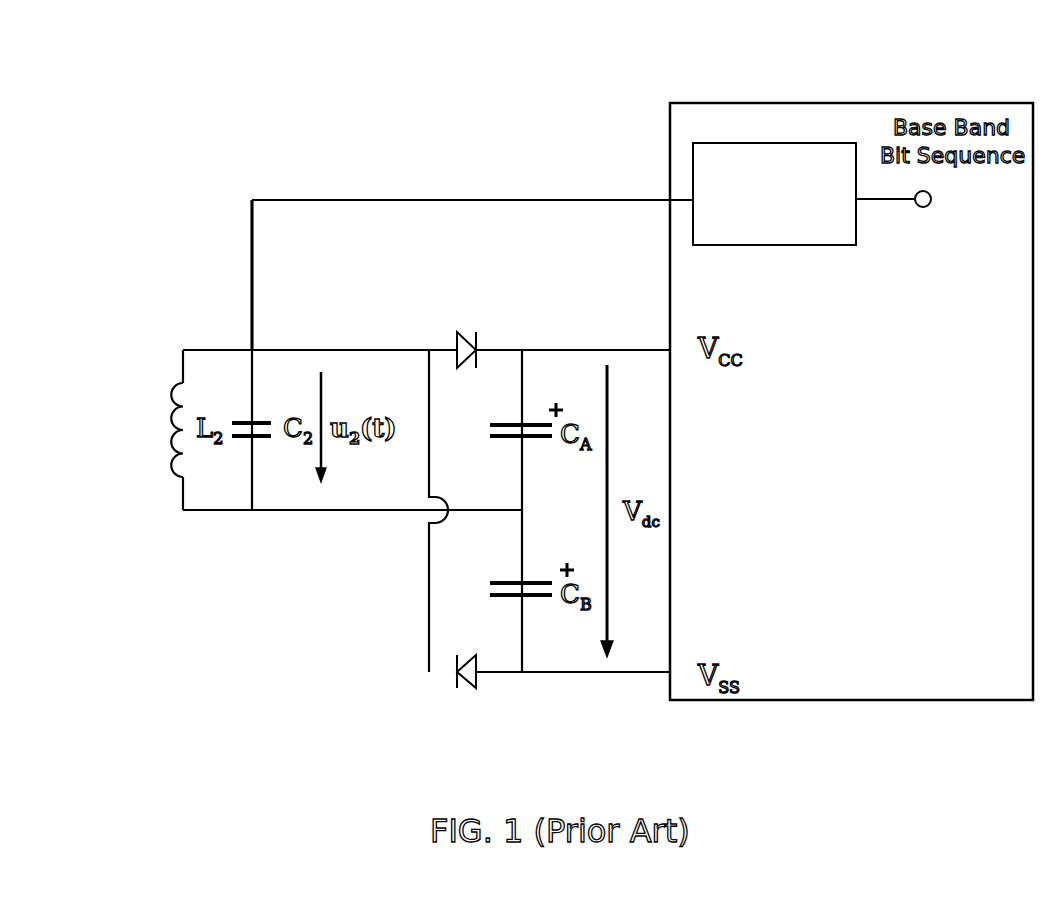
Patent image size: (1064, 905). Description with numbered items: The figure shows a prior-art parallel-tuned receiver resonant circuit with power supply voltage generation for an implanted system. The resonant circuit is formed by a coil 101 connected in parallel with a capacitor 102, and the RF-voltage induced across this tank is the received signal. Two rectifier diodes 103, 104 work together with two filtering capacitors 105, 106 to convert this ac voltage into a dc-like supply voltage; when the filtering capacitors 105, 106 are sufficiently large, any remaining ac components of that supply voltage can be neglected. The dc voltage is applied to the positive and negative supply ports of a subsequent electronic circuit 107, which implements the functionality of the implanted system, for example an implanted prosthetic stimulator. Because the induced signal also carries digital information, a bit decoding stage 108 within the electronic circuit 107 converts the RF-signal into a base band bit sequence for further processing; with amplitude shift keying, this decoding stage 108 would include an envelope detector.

The coil 101 is at (160, 442).
The capacitor 102 is at (272, 440).
The rectifier diode 103 is at (465, 327).
The rectifier diode 104 is at (448, 688).
The filtering capacitor 105 is at (533, 400).
The filtering capacitor 106 is at (538, 607).
The electronic circuit 107 is at (772, 103).
The bit decoding stage 108 is at (832, 143).